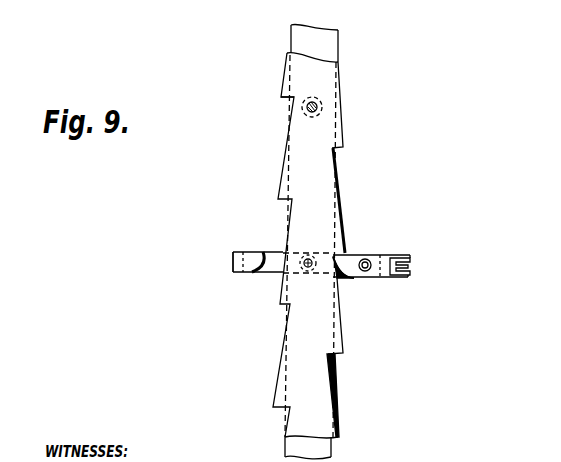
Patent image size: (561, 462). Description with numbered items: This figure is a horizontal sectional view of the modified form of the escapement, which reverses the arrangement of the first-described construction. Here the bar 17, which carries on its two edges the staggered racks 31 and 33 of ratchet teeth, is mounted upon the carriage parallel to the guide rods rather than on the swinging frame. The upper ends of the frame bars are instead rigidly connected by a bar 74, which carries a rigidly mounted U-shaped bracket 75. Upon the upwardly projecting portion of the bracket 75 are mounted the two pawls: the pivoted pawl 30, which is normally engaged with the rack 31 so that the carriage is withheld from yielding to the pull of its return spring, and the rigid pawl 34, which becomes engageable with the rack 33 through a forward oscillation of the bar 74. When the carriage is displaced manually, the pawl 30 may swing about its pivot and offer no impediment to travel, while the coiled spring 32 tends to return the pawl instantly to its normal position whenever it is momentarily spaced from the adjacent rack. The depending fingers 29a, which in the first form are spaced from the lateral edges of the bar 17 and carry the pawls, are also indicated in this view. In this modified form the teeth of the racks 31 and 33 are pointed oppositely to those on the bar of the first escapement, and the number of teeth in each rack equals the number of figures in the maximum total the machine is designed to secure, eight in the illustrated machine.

The bar 17 is at (308, 256).
The bar 74 is at (327, 43).
The rack 33 is at (288, 98).
The rack 31 is at (338, 150).
The U-shaped bracket 75 is at (273, 266).
The rigid pawl 34 is at (262, 255).
The depending fingers 29a is at (233, 273).
The pawl 30 is at (352, 270).
The coiled spring 32 is at (413, 263).